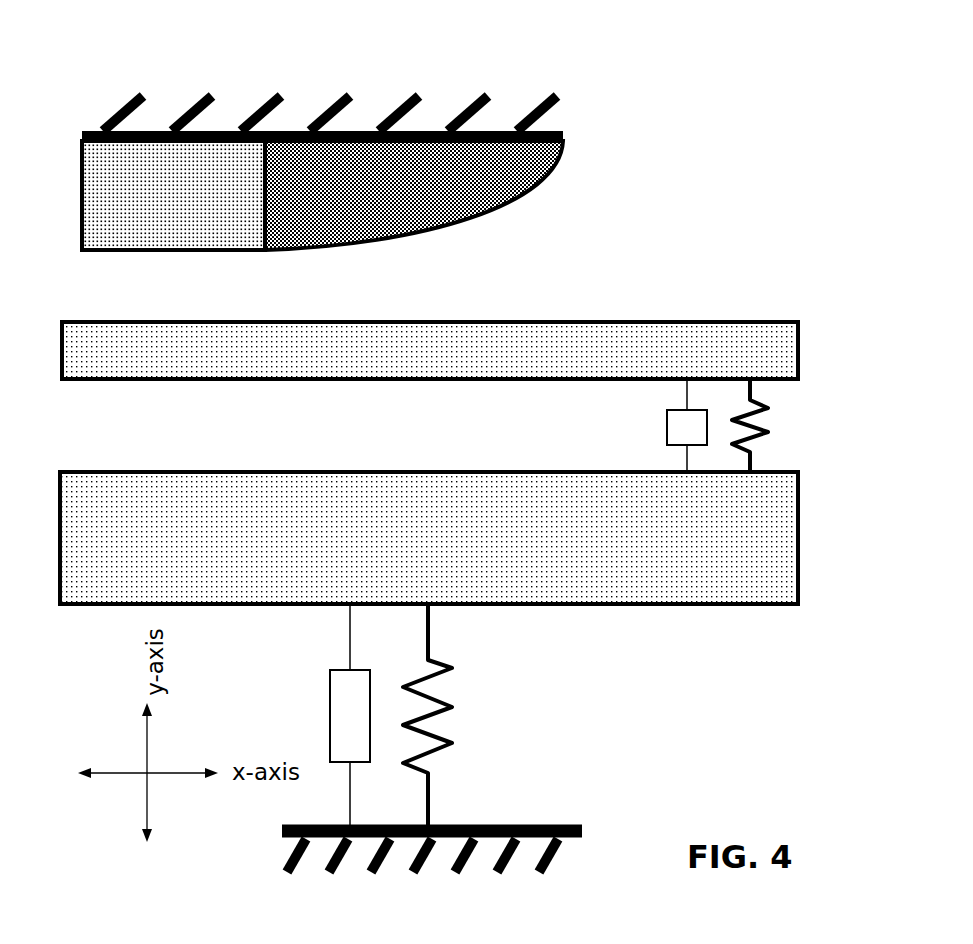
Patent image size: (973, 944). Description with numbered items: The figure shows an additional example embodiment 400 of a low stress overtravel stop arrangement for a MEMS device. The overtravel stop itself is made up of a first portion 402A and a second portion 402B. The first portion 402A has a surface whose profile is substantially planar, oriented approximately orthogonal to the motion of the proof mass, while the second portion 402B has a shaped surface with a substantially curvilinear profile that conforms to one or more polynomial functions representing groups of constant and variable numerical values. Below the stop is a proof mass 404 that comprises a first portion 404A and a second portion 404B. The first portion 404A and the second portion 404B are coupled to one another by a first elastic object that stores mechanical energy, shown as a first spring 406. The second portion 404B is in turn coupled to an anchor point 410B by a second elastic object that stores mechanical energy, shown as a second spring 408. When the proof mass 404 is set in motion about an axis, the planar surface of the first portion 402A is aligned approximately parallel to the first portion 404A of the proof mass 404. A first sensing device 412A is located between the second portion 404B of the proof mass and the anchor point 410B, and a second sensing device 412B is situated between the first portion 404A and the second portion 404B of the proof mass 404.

The example embodiment of a low stress overtravel stop 400 is at (194, 43).
The first portion of overtravel stop 402A is at (173, 195).
The second portion of overtravel stop 402B is at (414, 195).
The proof mass 404 is at (507, 467).
The first portion of proof mass 404A is at (430, 350).
The second portion of proof mass 404B is at (429, 538).
The first spring 406 is at (770, 420).
The second spring 408 is at (454, 667).
The anchor point 410B is at (566, 132).
The first sensing device 412A is at (350, 715).
The second sensing device 412B is at (674, 419).